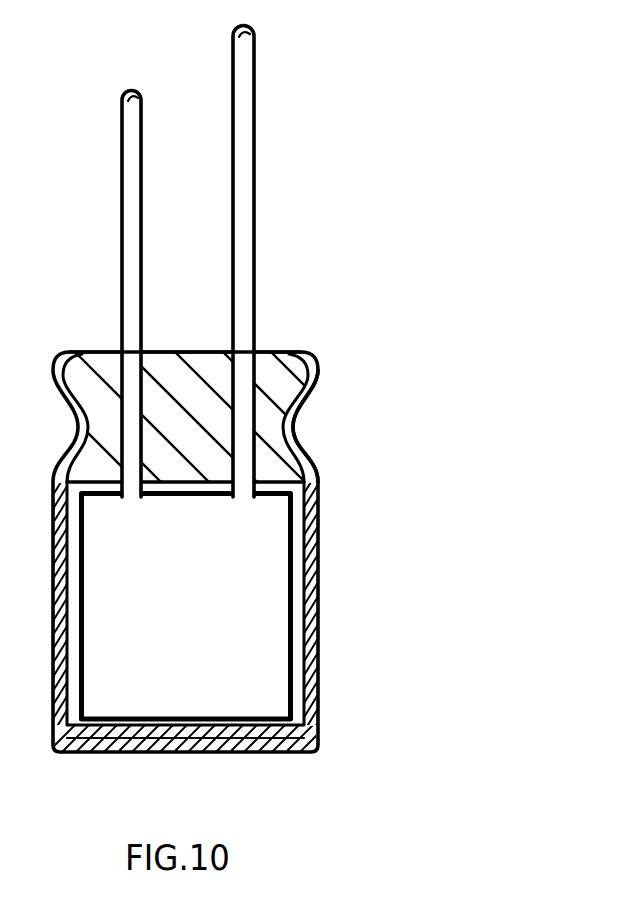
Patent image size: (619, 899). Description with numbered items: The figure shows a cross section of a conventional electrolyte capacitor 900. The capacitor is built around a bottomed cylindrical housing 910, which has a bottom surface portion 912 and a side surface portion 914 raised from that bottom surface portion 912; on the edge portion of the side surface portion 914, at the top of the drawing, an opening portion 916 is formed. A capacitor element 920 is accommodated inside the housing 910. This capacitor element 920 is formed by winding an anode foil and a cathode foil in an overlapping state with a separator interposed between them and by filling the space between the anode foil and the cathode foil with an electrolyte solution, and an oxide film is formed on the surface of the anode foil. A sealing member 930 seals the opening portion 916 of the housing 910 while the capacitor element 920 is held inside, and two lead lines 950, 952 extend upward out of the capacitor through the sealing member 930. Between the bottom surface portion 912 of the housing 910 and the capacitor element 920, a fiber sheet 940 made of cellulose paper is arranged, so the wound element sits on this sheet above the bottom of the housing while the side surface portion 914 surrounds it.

The electrolyte capacitor 900 is at (224, 418).
The housing 910 is at (226, 543).
The bottom surface portion 912 is at (150, 753).
The side surface portion 914 is at (320, 520).
The opening portion 916 is at (332, 317).
The capacitor element 920 is at (280, 633).
The sealing member 930 is at (278, 424).
The fiber sheet 940 is at (212, 753).
The lead line 950 is at (243, 203).
The lead line 952 is at (133, 214).